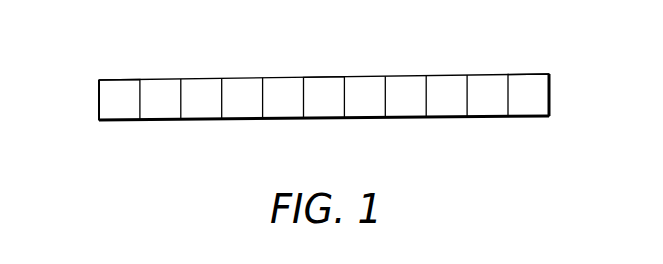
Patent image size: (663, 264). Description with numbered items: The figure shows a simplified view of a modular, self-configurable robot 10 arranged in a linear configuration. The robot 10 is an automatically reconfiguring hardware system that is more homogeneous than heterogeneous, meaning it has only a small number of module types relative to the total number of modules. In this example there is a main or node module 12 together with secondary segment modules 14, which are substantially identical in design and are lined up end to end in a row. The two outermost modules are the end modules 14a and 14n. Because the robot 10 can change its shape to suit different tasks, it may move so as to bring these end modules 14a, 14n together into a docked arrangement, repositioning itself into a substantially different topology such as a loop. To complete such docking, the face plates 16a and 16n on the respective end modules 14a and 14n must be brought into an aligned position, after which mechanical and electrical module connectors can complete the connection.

The modular self-configurable robot 10 is at (74, 50).
The segment modules 14 is at (146, 56).
The node module 12 is at (323, 111).
The end module 14a is at (116, 115).
The end module 14n is at (527, 108).
The face plate 16a is at (92, 101).
The face plate 16n is at (556, 93).